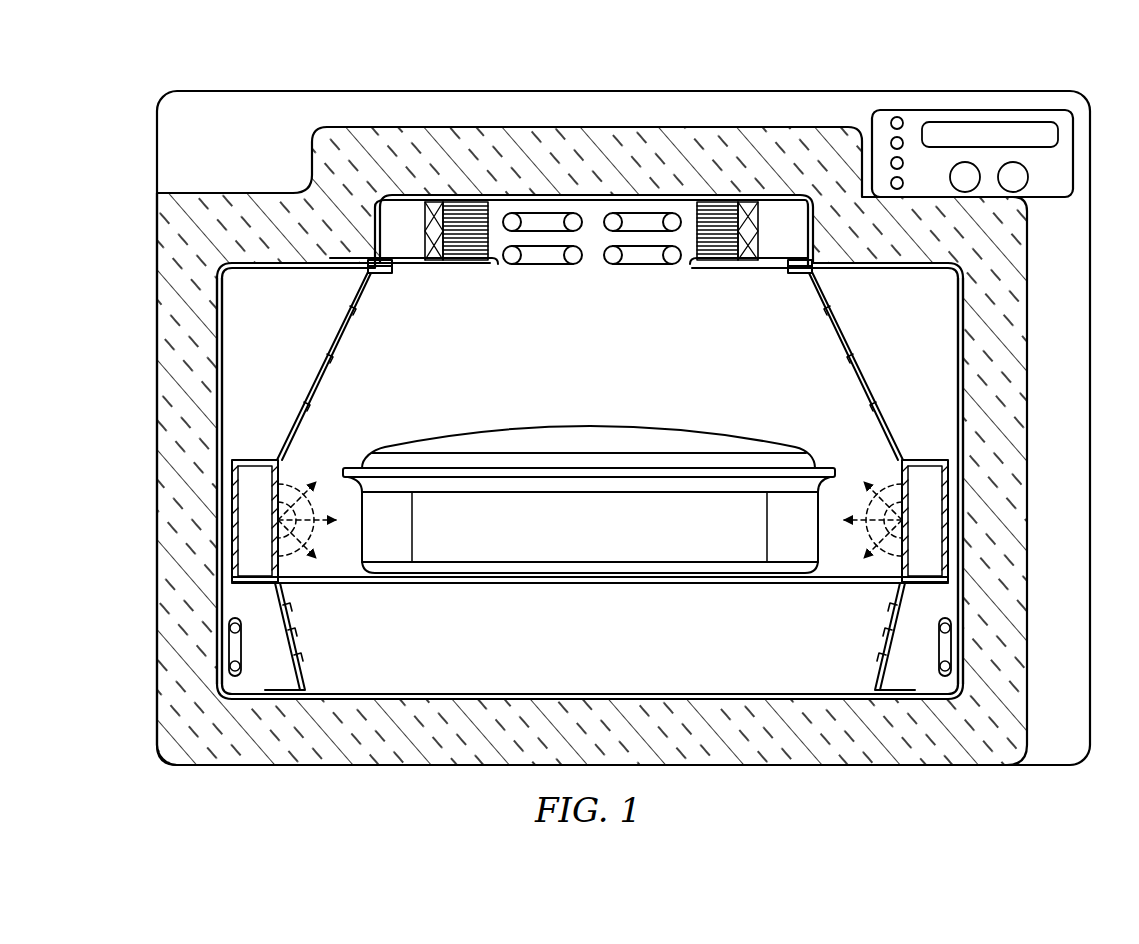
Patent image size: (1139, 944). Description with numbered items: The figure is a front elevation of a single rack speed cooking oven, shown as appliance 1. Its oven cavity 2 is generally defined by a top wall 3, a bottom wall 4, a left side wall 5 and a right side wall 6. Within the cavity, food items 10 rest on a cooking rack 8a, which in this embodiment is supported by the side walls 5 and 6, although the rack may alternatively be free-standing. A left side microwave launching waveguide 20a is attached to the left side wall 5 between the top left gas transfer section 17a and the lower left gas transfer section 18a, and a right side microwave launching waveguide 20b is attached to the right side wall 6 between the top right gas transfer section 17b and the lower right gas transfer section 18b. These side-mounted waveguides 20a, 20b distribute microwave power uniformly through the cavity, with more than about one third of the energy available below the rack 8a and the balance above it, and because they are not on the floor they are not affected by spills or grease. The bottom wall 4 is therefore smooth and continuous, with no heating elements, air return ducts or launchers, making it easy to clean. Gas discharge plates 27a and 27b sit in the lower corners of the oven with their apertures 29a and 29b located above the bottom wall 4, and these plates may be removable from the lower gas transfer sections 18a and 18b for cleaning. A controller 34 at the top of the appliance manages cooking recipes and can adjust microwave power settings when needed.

The appliance 1 is at (1094, 289).
The oven cavity 2 is at (579, 364).
The top wall 3 is at (913, 264).
The bottom wall 4 is at (665, 697).
The left side wall 5 is at (215, 366).
The right side wall 6 is at (962, 373).
The cooking rack 8a is at (510, 585).
The food items 10 is at (577, 541).
The top left gas transfer section 17a is at (296, 330).
The top right gas transfer section 17b is at (922, 332).
The lower left gas transfer section 18a is at (284, 686).
The lower right gas transfer section 18b is at (931, 686).
The left side microwave launching waveguide 20a is at (250, 478).
The right side microwave launching waveguide 20b is at (931, 478).
The gas discharge plate 27a is at (302, 687).
The gas discharge plate 27b is at (877, 688).
The apertures 29a is at (290, 610).
The apertures 29b is at (878, 612).
The controller 34 is at (972, 110).